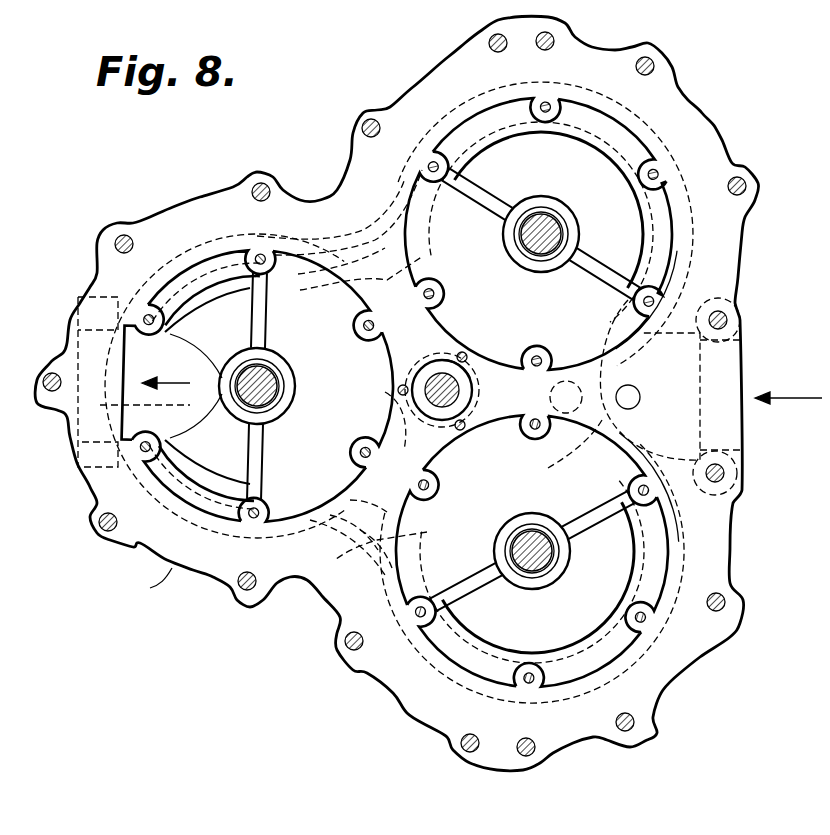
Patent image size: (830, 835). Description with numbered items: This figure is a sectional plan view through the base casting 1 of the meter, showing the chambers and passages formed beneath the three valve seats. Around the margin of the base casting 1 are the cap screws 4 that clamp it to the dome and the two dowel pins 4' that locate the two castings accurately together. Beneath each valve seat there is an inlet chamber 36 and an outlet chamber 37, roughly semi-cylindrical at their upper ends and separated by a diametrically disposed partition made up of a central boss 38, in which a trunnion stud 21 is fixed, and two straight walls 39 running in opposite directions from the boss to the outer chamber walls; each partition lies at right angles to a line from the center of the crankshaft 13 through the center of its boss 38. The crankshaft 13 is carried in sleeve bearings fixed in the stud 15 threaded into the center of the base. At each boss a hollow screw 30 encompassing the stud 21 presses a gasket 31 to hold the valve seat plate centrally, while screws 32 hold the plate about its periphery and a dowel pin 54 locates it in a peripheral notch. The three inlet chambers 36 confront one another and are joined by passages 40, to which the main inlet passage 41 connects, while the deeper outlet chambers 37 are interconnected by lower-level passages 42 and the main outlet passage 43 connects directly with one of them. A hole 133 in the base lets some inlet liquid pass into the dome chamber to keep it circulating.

The base casting 1 is at (397, 393).
The cap screws 4 is at (418, 368).
The dowel pins 4' is at (533, 397).
The shaft 13 is at (462, 382).
The stud 15 is at (432, 420).
The studs 21 is at (520, 548).
The hollow screw 30 is at (530, 530).
The gasket 31 is at (545, 532).
The screws 32 is at (641, 616).
The inlet chamber 36 is at (418, 383).
The outlet chamber 37 is at (444, 391).
The central boss 38 is at (570, 565).
The straight walls 39 is at (470, 577).
The passage 40 is at (412, 534).
The main inlet passage 41 is at (735, 381).
The passage 42 is at (360, 512).
The main outlet passage 43 is at (140, 397).
The dowel pin 54 is at (460, 356).
The hole 133 is at (636, 392).